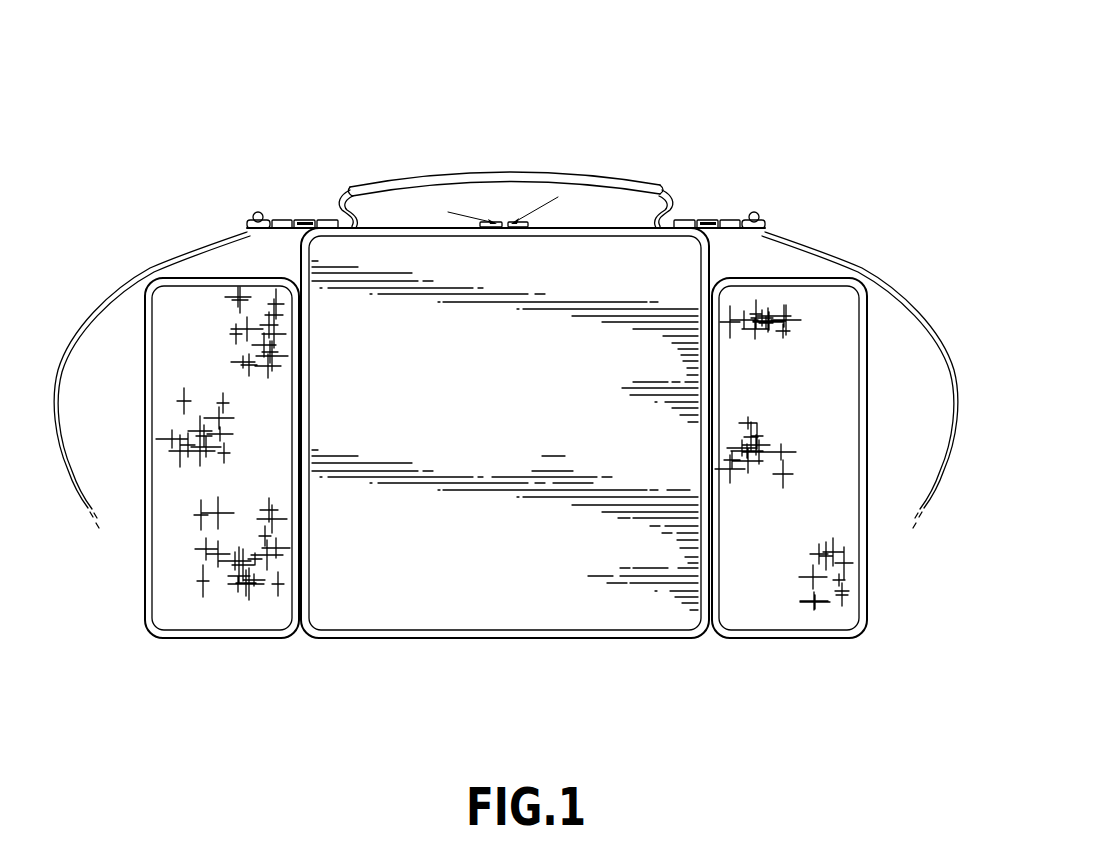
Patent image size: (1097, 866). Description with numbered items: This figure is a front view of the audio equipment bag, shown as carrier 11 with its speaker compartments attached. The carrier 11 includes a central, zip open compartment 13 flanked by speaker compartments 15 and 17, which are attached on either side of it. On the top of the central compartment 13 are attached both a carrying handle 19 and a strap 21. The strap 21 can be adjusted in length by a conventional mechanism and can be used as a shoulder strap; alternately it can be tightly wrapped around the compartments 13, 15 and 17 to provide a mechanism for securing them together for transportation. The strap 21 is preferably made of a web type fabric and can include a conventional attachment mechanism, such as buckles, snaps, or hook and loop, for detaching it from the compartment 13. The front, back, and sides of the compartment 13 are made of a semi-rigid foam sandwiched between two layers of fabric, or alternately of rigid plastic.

The carrier 11 is at (740, 110).
The central zip open compartment 13 is at (578, 628).
The speaker compartment 15 is at (816, 630).
The speaker compartment 17 is at (160, 558).
The carrying handle 19 is at (512, 172).
The strap 21 is at (126, 283).